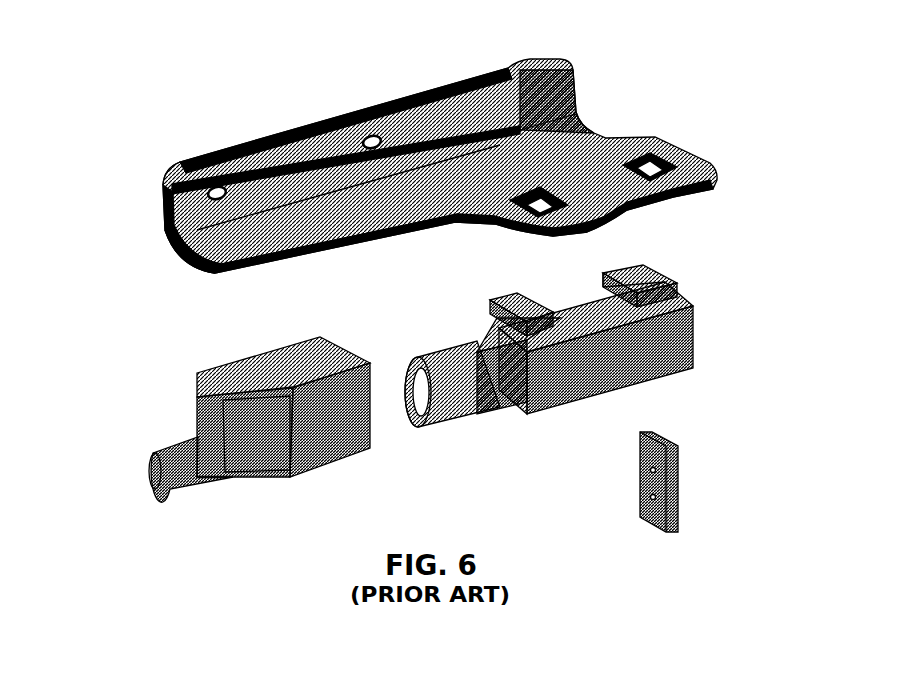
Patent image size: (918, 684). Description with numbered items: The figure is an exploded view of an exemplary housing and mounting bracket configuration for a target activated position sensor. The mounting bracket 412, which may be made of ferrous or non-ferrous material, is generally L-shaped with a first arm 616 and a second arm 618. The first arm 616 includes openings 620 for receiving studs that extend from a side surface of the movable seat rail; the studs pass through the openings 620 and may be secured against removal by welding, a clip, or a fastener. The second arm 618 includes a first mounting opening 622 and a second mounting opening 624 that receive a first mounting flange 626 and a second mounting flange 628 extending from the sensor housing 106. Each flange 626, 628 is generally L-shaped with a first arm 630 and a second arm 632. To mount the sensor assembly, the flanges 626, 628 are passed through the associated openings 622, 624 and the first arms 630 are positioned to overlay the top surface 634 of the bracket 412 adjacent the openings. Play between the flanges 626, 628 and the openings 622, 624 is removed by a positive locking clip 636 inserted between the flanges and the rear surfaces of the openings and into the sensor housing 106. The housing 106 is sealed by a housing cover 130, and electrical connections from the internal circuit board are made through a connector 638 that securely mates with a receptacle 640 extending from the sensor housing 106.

The mounting bracket 412 is at (408, 223).
The first arm 616 is at (165, 198).
The second arm 618 is at (193, 258).
The openings 620 is at (210, 195).
The first mounting opening 622 is at (545, 190).
The second mounting opening 624 is at (662, 163).
The top surface 634 is at (293, 237).
The sensor housing 106 is at (601, 359).
The housing cover 130 is at (532, 414).
The first mounting flange 626 is at (506, 297).
The second mounting flange 628 is at (631, 262).
The first arm 630 is at (607, 277).
The second arm 632 is at (645, 297).
The receptacle 640 is at (447, 425).
The connector 638 is at (297, 480).
The positive locking clip 636 is at (678, 500).